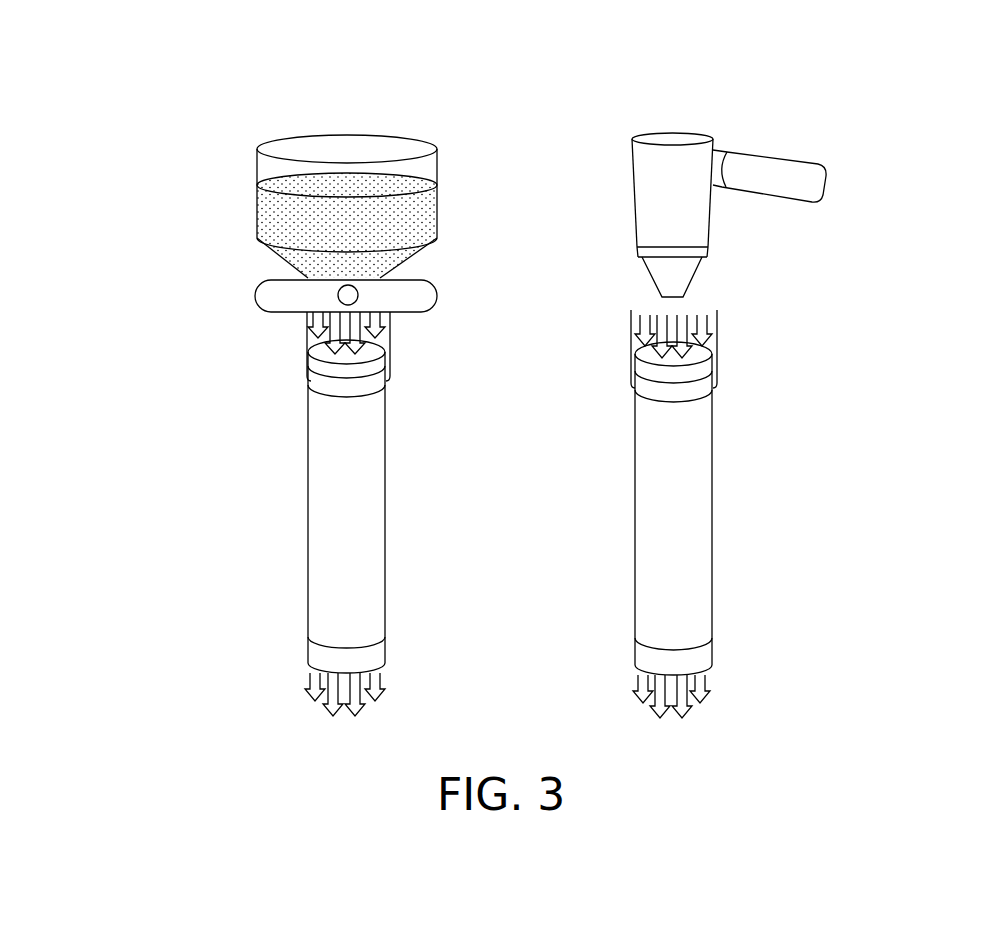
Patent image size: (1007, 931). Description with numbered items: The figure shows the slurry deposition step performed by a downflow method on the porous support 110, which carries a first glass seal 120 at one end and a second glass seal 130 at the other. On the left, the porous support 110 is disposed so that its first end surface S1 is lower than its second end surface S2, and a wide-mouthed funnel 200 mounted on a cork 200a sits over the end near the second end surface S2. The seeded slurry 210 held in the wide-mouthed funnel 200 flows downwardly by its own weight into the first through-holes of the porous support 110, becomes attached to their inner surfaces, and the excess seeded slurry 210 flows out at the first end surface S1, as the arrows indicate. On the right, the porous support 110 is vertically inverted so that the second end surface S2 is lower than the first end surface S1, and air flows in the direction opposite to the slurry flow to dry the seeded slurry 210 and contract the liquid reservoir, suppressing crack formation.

The porous support 110 is at (296, 510).
The first glass seal 120 is at (318, 652).
The second glass seal 130 is at (306, 370).
The wide-mouthed funnel 200 is at (257, 207).
The cork 200a is at (268, 292).
The seeded slurry 210 is at (347, 180).
The first end surface S1 is at (320, 677).
The second end surface S2 is at (306, 343).